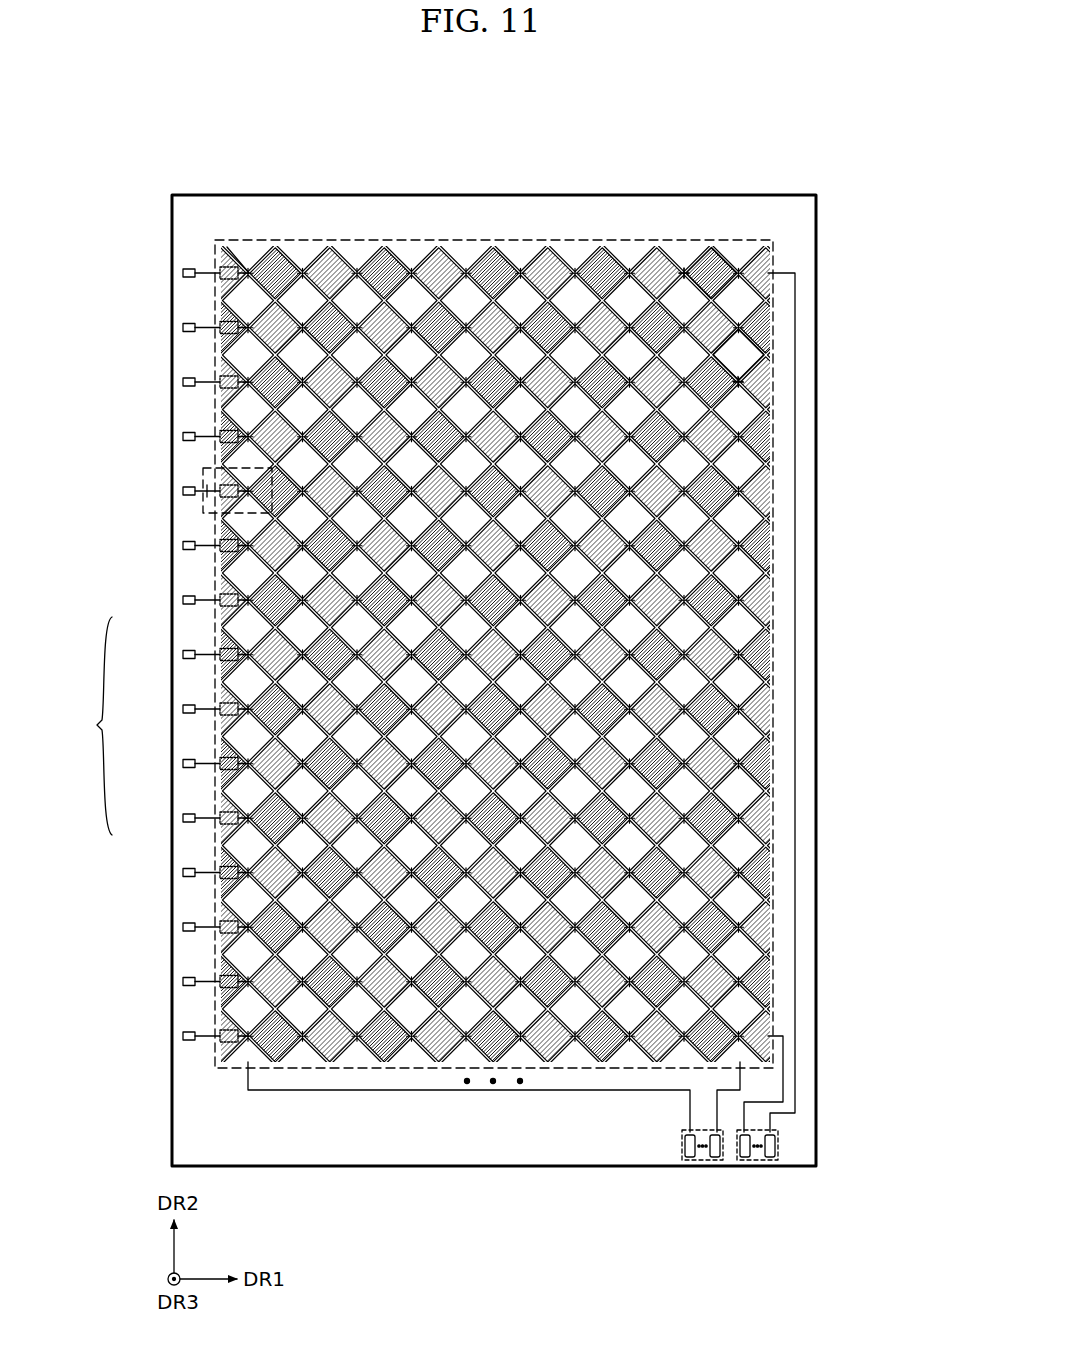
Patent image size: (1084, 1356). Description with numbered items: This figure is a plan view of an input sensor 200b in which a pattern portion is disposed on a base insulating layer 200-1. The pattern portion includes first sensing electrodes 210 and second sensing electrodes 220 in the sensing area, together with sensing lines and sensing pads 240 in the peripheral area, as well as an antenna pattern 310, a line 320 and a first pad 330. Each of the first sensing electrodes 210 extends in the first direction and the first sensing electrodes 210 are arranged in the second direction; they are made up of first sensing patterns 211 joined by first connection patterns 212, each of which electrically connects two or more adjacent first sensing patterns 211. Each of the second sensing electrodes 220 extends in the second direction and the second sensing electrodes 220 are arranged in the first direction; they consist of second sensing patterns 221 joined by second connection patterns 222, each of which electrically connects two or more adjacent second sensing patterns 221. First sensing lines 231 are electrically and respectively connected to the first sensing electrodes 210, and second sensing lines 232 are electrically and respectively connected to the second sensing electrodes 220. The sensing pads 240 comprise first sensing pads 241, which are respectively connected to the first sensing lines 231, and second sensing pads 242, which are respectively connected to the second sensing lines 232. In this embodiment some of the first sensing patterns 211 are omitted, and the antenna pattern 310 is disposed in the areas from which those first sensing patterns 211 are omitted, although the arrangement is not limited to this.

The input sensor 200b is at (786, 110).
The base insulating layer 200-1 is at (817, 693).
The first sensing electrodes 210 is at (495, 580).
The first sensing patterns 211 is at (692, 262).
The first connection patterns 212 is at (684, 271).
The second sensing electrodes 220 is at (838, 377).
The second sensing patterns 221 is at (754, 359).
The second connection patterns 222 is at (740, 382).
The first sensing lines 231 is at (796, 593).
The second sensing lines 232 is at (465, 1093).
The sensing pads 240 is at (731, 1201).
The first sensing pads 241 is at (755, 1162).
The second sensing pads 242 is at (697, 1162).
The antenna pattern 310 is at (229, 250).
The line 320 is at (203, 266).
The first pad 330 is at (188, 266).